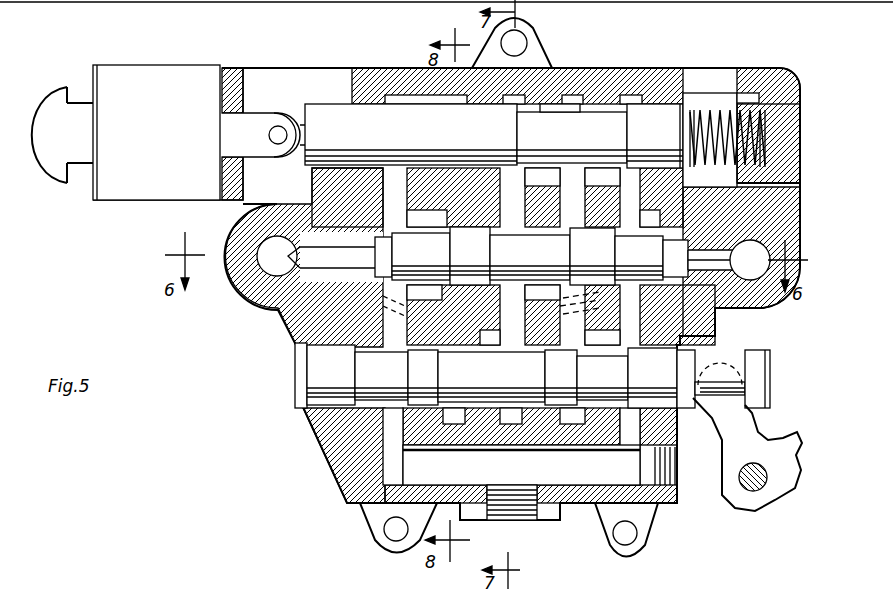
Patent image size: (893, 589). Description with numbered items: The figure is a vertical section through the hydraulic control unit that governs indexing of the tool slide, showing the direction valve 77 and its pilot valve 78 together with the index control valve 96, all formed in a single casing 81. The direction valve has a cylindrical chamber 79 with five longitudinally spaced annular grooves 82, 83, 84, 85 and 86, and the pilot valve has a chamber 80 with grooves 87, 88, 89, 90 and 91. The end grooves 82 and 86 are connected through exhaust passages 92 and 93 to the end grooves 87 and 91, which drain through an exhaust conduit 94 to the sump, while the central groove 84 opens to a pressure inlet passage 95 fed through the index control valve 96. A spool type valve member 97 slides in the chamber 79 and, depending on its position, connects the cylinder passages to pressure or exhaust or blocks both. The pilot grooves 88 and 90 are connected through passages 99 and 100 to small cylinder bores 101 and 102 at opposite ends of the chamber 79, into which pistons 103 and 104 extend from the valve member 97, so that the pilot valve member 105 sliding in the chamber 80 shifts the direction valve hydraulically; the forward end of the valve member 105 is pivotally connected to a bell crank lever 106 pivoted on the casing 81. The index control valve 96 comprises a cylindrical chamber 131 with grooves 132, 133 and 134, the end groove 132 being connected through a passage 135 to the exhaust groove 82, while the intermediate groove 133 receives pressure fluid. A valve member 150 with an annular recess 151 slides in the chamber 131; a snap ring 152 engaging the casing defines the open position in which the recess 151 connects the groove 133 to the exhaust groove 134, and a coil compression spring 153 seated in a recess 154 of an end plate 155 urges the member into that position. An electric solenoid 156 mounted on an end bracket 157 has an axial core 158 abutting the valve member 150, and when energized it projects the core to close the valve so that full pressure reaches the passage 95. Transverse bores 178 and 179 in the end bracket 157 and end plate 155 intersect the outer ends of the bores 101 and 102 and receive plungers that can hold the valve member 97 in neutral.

The direction valve 77 is at (269, 322).
The pilot valve 78 is at (297, 428).
The cylindrical bore or chamber 79 is at (532, 240).
The cylindrical bore or chamber 80 is at (536, 352).
The casing 81 is at (605, 80).
The annular groove 82 is at (408, 226).
The annular groove 83 is at (487, 226).
The central groove 84 is at (560, 226).
The annular groove 85 is at (600, 226).
The annular groove 86 is at (658, 226).
The annular groove 87 is at (413, 410).
The annular groove 88 is at (467, 410).
The central or intermediate groove 89 is at (524, 410).
The annular groove 90 is at (584, 410).
The annular groove 91 is at (612, 328).
The exhaust passage 92 is at (392, 322).
The exhaust passage 93 is at (618, 322).
The exhaust conduit or passage 94 is at (520, 530).
The pressure inlet line or passage 95 is at (510, 198).
The index control valve 96 is at (383, 56).
The valve member 97 is at (480, 284).
The passage 99 is at (320, 284).
The passage 100 is at (735, 310).
The small cylinder bore 101 is at (336, 212).
The small cylinder bore 102 is at (716, 212).
The piston 103 is at (345, 248).
The piston 104 is at (722, 256).
The valve member 105 is at (490, 306).
The bell crank lever 106 is at (722, 458).
The cylindrical chamber 131 is at (545, 117).
The annular groove 132 is at (420, 104).
The intermediate groove 133 is at (500, 104).
The annular groove 134 is at (632, 100).
The passage 135 is at (392, 196).
The valve member 150 is at (305, 160).
The annular recess 151 is at (560, 95).
The snap ring 152 is at (712, 90).
The coil compression spring 153 is at (724, 140).
The recess 154 is at (750, 98).
The end plate 155 is at (782, 68).
The electric solenoid 156 is at (177, 120).
The end bracket 157 is at (290, 90).
The axial core 158 is at (252, 118).
The transverse bore 178 is at (245, 272).
The transverse bore 179 is at (760, 244).